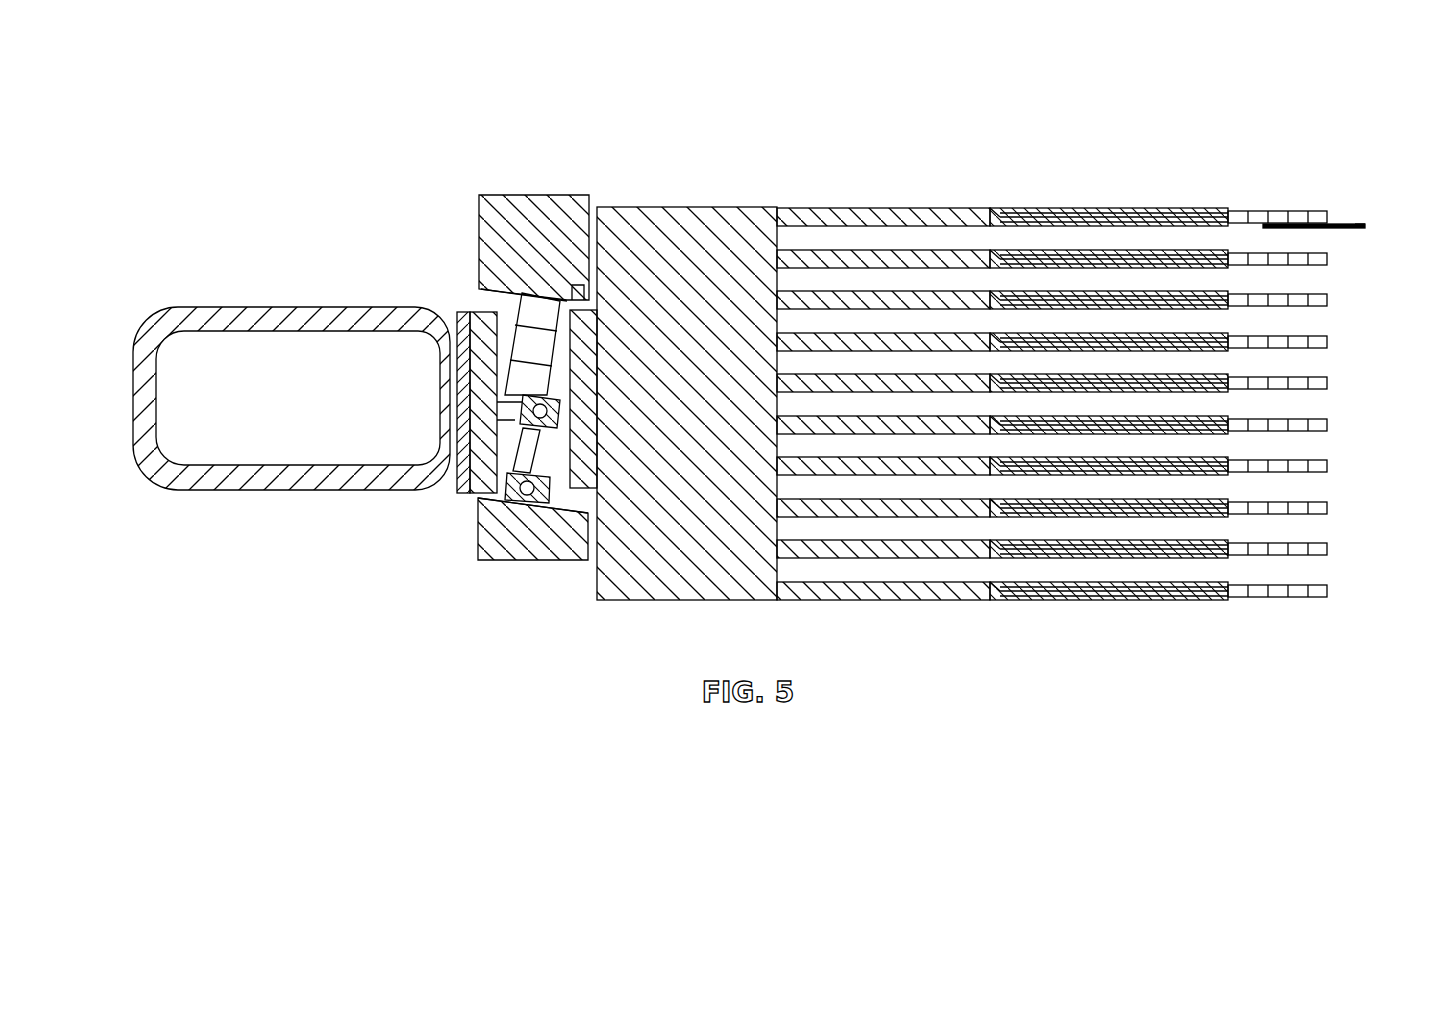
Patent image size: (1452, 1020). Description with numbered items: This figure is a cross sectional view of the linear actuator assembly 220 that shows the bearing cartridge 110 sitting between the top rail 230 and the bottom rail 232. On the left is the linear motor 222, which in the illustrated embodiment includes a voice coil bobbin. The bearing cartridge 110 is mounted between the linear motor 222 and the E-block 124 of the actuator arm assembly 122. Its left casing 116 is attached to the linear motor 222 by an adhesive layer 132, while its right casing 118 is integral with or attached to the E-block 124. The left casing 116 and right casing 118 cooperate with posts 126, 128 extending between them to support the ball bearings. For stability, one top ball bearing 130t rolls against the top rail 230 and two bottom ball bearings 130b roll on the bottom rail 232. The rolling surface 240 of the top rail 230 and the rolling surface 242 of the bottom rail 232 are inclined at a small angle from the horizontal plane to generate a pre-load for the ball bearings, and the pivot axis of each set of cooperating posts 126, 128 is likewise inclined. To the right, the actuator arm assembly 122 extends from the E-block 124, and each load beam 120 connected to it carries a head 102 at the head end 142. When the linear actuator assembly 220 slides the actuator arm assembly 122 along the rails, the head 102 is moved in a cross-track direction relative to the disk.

The linear actuator assembly 220 is at (268, 68).
The bearing cartridge 110 is at (374, 209).
The linear motor 222 is at (258, 307).
The adhesive layer 132 is at (455, 490).
The left casing 116 is at (490, 472).
The top rail 230 is at (542, 205).
The rolling surface 240 is at (481, 289).
The right casing 118 is at (590, 300).
The top ball bearing 130t is at (505, 300).
The post 126 is at (510, 450).
The bottom ball bearing 130b is at (500, 495).
The post 128 is at (548, 455).
The bottom rail 232 is at (525, 553).
The rolling surface 242 is at (600, 505).
The E-block 124 is at (677, 207).
The actuator arm assembly 122 is at (892, 182).
The load beam 120 is at (1284, 210).
The head 102 is at (1350, 224).
The head end 142 is at (1352, 237).